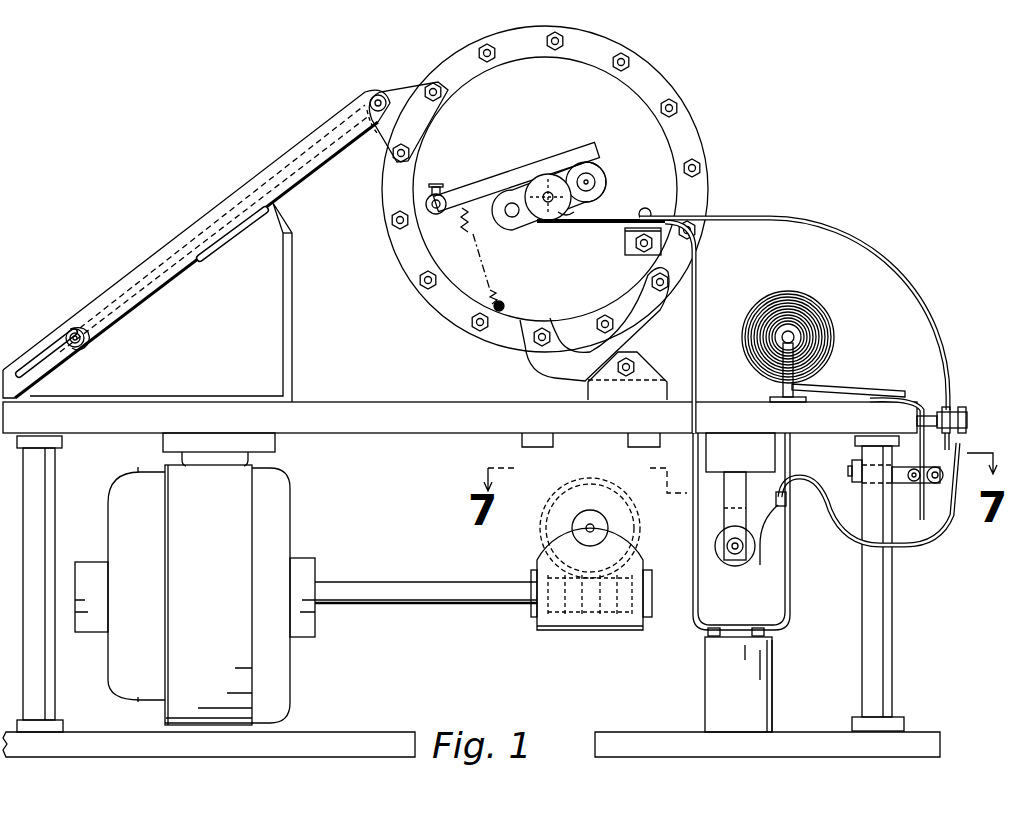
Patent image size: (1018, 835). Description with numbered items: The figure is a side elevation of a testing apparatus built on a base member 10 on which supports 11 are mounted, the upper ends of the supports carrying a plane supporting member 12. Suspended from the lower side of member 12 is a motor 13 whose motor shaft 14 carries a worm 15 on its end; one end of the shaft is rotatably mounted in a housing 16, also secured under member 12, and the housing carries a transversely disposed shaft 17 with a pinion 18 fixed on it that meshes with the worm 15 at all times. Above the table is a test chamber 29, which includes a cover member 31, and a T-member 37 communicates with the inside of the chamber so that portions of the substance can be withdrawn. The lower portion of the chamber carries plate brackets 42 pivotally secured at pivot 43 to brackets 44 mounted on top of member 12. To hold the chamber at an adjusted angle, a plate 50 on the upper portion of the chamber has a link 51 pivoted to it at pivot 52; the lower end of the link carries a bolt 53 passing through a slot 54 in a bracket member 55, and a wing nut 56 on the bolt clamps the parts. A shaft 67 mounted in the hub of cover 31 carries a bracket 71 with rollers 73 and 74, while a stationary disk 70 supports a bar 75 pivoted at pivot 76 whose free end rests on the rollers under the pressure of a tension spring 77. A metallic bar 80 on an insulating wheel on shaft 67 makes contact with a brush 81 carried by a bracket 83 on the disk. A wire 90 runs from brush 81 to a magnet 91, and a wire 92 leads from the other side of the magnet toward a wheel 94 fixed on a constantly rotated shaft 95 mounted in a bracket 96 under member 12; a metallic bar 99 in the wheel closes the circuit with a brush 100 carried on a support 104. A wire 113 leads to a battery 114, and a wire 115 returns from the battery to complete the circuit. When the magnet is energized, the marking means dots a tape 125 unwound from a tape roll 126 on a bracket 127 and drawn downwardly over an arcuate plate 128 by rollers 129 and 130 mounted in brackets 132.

The base member 10 is at (356, 738).
The supports 11 is at (870, 632).
The plane supporting member 12 is at (446, 398).
The motor 13 is at (195, 579).
The motor shaft 14 is at (394, 586).
The worm 15 is at (552, 634).
The housing 16 is at (572, 569).
The transversely disposed shaft 17 is at (592, 515).
The pinion 18 is at (540, 515).
The test chamber 29 is at (705, 118).
The cover member 31 is at (670, 84).
The T-member 37 is at (612, 60).
The plate brackets 42 is at (540, 372).
The pivot 43 is at (636, 366).
The brackets 44 is at (627, 376).
The plate 50 is at (401, 109).
The link 51 is at (196, 244).
The pivot 52 is at (370, 98).
The bolt 53 is at (72, 326).
The slot 54 is at (36, 358).
The bracket member 55 is at (220, 268).
The wing nut 56 is at (92, 340).
The shaft 67 is at (578, 215).
The disk 70 is at (545, 189).
The bracket 71 is at (594, 174).
The roller 73 is at (606, 183).
The roller 74 is at (510, 228).
The bar 75 is at (582, 148).
The pivot 76 is at (444, 194).
The tension spring 77 is at (504, 296).
The metallic bar 80 is at (546, 172).
The brush 81 is at (602, 226).
The bracket 83 is at (626, 256).
The wire 90 is at (896, 252).
The magnet 91 is at (962, 410).
The wire 92 is at (928, 536).
The wheel 94 is at (733, 566).
The shaft 95 is at (738, 556).
The bracket 96 is at (748, 464).
The metallic bar 99 is at (730, 522).
The brush 100 is at (782, 526).
The support 104 is at (776, 478).
The wire 113 is at (794, 592).
The battery 114 is at (738, 684).
The wire 115 is at (692, 558).
The tape 125 is at (832, 388).
The tape roll 126 is at (784, 334).
The bracket 127 is at (778, 390).
The arcuate plate 128 is at (910, 394).
The roller 129 is at (910, 488).
The roller 130 is at (932, 488).
The brackets 132 is at (856, 464).